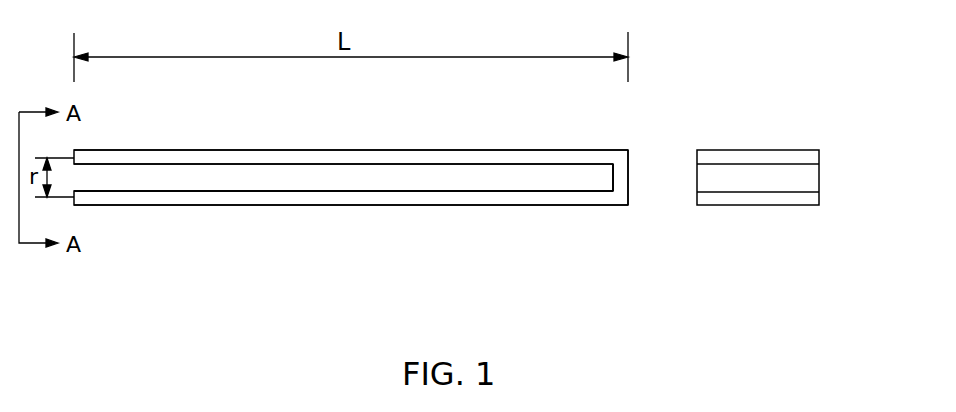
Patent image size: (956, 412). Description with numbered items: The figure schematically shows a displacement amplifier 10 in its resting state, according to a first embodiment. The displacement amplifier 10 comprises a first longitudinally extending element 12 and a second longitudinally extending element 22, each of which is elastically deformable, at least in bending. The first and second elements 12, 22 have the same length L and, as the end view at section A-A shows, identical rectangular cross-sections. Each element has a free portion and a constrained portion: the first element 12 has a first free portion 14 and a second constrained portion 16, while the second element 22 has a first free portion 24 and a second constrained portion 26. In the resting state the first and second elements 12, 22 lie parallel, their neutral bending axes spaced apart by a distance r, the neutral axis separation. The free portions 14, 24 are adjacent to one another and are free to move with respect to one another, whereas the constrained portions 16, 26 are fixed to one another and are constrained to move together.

The displacement amplifier 10 is at (781, 44).
The first longitudinally extending element 12 is at (318, 156).
The first free portion 14 is at (84, 158).
The second constrained portion 16 is at (618, 157).
The second longitudinally extending element 22 is at (290, 198).
The first free portion 24 is at (84, 198).
The second constrained portion 26 is at (613, 200).